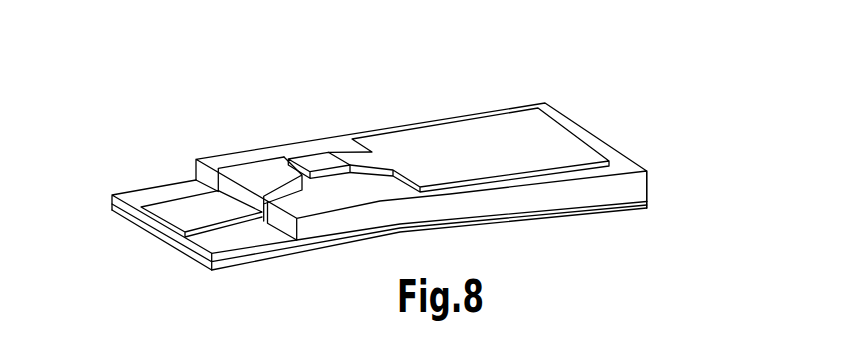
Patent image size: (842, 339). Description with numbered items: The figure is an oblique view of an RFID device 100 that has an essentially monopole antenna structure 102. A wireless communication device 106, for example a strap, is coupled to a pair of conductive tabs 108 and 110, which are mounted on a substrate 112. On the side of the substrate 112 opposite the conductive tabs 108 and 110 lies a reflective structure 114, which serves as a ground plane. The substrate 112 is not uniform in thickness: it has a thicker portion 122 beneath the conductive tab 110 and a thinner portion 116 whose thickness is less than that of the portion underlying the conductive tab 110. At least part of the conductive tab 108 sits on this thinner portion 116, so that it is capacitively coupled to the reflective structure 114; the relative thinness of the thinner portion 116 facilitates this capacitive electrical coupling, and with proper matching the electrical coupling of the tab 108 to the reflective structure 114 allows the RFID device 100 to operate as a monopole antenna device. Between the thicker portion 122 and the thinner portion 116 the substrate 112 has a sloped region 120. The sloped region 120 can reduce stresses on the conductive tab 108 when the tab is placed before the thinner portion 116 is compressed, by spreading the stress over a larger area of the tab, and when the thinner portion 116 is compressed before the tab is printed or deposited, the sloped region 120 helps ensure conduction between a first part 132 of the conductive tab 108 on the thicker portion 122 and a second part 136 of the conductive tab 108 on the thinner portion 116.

The RFID device 100 is at (107, 85).
The monopole antenna structure 102 is at (205, 100).
The wireless communication device 106 is at (320, 156).
The conductive tab 108 is at (230, 157).
The conductive tab 110 is at (458, 128).
The substrate 112 is at (654, 183).
The reflective structure 114 is at (632, 206).
The thinner portion 116 is at (249, 255).
The sloped region 120 is at (282, 225).
The thicker portion 122 is at (510, 206).
The first part 132 is at (257, 167).
The second part 136 is at (177, 217).